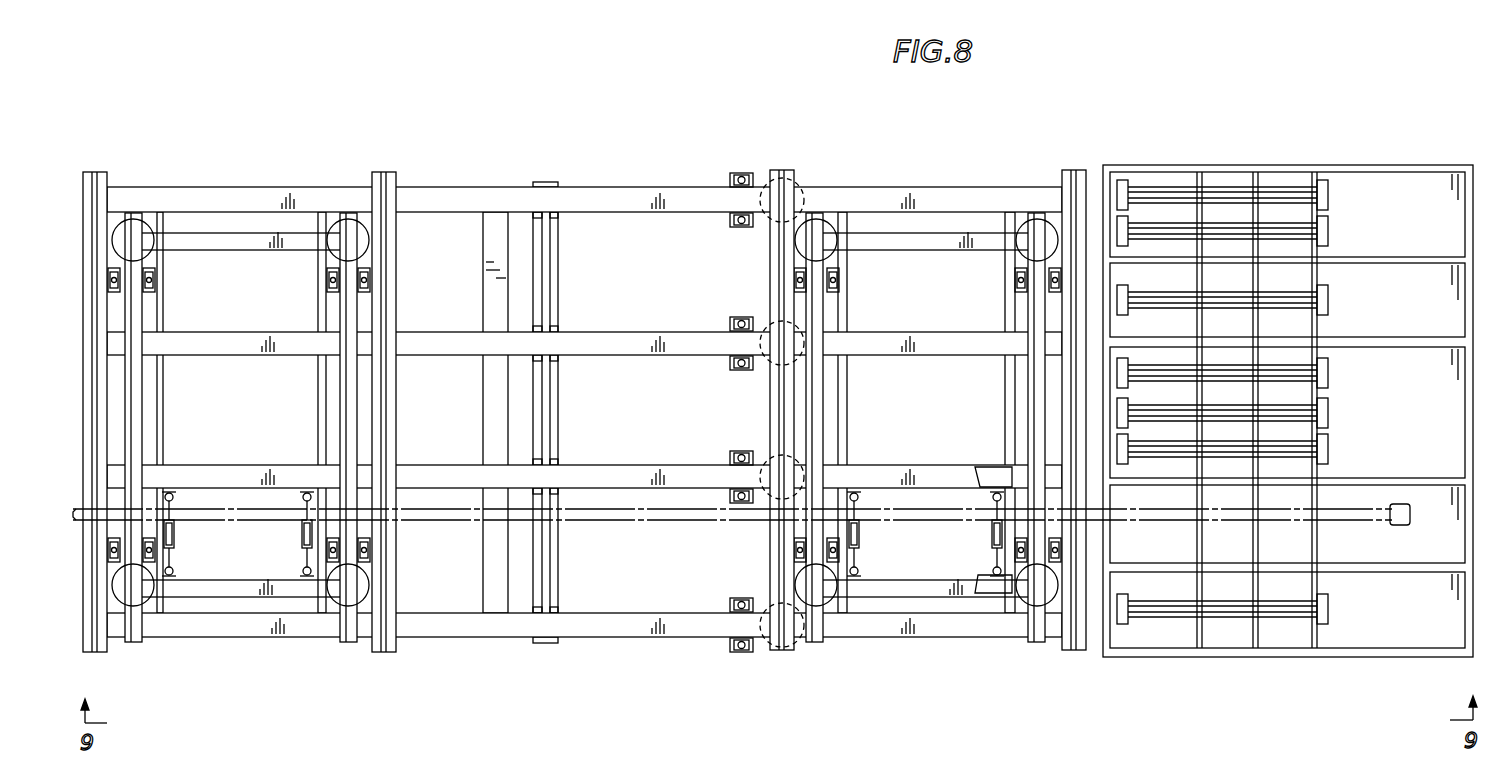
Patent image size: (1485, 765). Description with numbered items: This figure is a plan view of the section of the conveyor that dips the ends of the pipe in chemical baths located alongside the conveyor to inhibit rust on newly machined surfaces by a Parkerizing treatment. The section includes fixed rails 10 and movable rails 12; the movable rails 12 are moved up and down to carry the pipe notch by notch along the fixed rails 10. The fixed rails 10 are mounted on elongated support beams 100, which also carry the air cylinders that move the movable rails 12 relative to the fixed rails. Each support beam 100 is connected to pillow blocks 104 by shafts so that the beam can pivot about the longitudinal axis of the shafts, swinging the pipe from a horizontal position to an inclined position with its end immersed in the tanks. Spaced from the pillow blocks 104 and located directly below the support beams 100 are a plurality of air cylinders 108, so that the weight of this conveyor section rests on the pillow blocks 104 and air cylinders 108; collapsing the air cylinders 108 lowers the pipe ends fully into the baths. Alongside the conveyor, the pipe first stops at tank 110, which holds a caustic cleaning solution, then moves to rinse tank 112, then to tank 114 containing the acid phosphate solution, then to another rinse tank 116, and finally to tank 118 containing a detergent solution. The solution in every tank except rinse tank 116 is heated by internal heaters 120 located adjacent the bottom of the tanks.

The fixed rails 10 is at (1075, 172).
The movable rails 12 is at (340, 407).
The support beam 100 is at (637, 204).
The pillow blocks 104 is at (548, 182).
The air cylinders 108 is at (768, 173).
The tank 110 is at (1288, 417).
The rinse tank 112 is at (1428, 314).
The tank 114 is at (1433, 424).
The rinse tank 116 is at (1433, 556).
The tank 118 is at (1386, 654).
The internal heaters 120 is at (1330, 195).